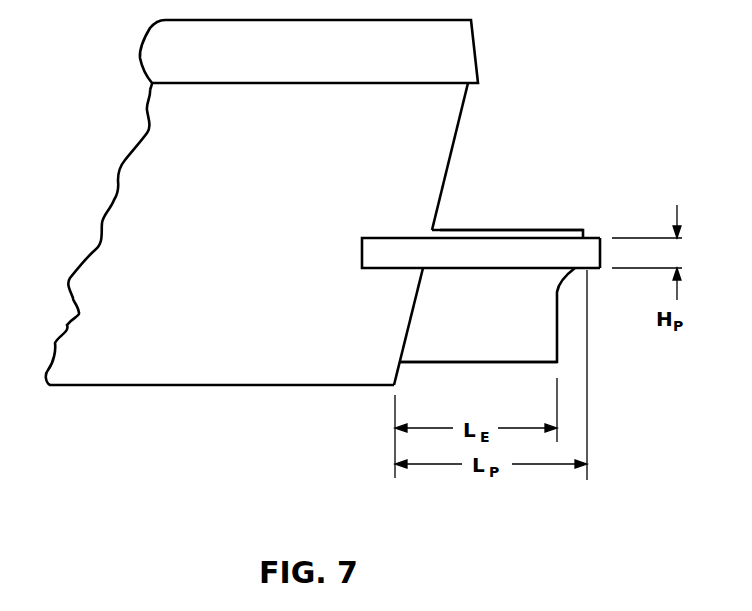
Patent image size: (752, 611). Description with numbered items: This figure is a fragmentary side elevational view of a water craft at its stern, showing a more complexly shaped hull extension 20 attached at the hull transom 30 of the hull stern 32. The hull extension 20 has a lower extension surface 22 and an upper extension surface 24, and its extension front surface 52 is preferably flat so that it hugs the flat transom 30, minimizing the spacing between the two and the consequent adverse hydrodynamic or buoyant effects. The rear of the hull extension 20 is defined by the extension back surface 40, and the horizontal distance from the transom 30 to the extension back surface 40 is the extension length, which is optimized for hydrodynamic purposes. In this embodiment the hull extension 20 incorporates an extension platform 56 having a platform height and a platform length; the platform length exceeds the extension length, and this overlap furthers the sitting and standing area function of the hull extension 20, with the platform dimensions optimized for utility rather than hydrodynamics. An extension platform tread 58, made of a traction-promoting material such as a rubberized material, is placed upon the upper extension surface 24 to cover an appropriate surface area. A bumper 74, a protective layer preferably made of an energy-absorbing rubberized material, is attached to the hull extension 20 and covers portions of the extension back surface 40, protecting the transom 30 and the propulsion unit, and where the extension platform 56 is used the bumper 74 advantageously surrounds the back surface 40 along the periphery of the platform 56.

The hull extension 20 is at (430, 313).
The lower extension surface 22 is at (487, 369).
The upper extension surface 24 is at (550, 226).
The hull transom 30 is at (460, 144).
The hull stern 32 is at (463, 117).
The extension back surface 40 is at (552, 332).
The extension front surface 52 is at (425, 285).
The extension platform 56 is at (588, 237).
The extension platform tread 58 is at (483, 224).
The bumper 74 is at (395, 248).